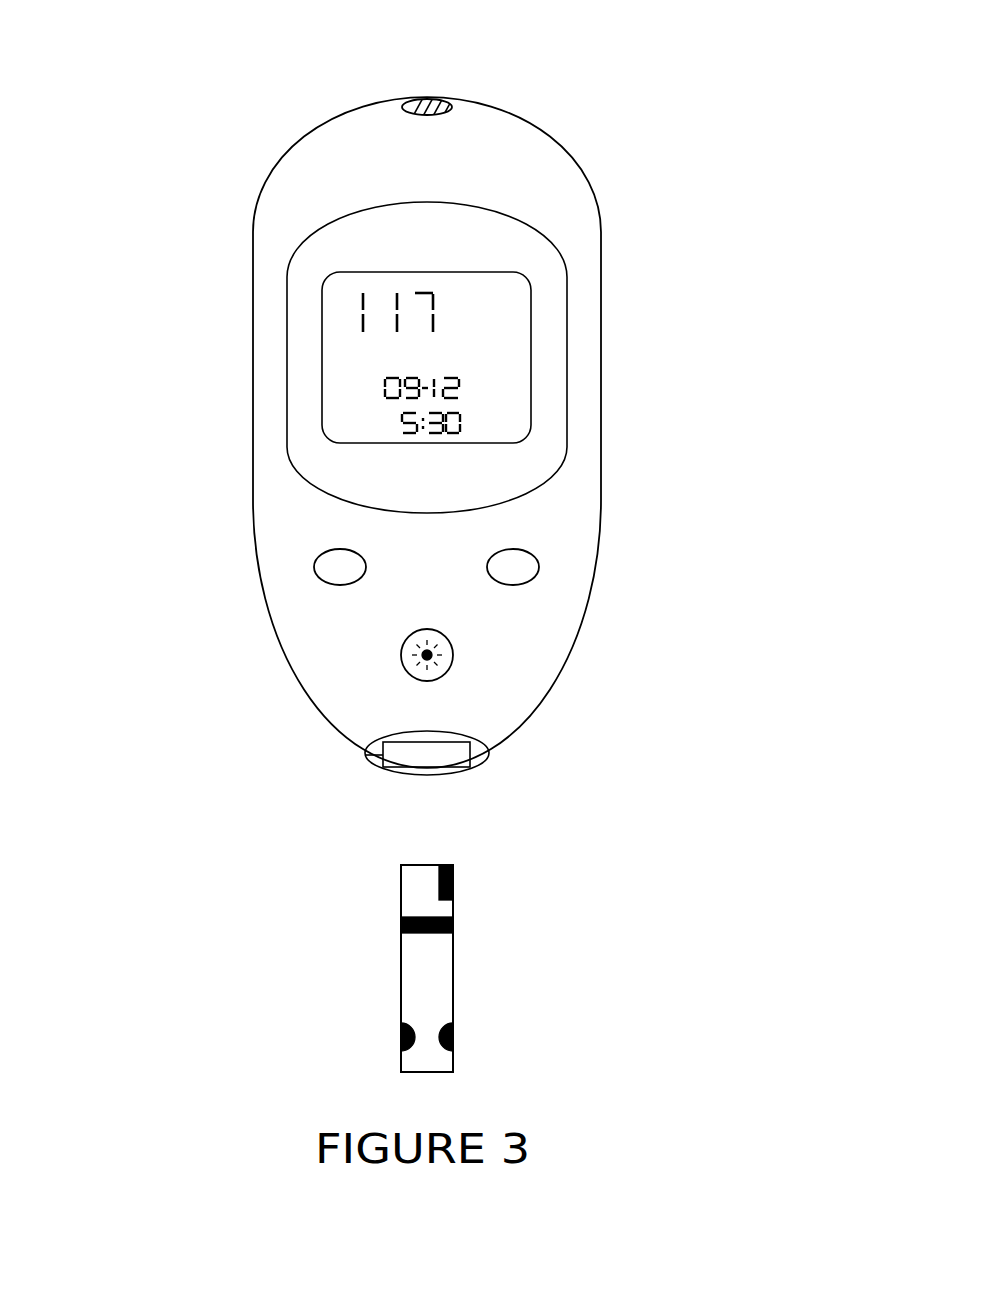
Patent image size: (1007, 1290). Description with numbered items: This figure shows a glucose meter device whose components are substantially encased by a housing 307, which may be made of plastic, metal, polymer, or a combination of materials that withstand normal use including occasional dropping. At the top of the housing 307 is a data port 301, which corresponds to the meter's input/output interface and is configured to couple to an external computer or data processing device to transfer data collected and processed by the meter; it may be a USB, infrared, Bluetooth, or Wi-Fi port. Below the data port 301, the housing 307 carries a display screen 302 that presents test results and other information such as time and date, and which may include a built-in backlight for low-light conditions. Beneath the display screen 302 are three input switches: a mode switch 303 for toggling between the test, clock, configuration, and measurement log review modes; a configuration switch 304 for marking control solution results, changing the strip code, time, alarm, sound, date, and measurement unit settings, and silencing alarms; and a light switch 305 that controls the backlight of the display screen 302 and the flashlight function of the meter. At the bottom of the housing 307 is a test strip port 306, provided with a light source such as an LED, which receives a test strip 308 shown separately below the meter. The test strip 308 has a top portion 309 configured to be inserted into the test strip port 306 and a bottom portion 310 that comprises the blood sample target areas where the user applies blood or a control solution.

The data port 301 is at (239, 65).
The display screen 302 is at (345, 395).
The mode switch 303 is at (314, 567).
The configuration switch 304 is at (539, 568).
The light switch 305 is at (401, 655).
The test strip port 306 is at (470, 755).
The housing 307 is at (253, 324).
The test strip 308 is at (453, 986).
The top portion 309 is at (453, 883).
The bottom portion 310 is at (453, 1043).